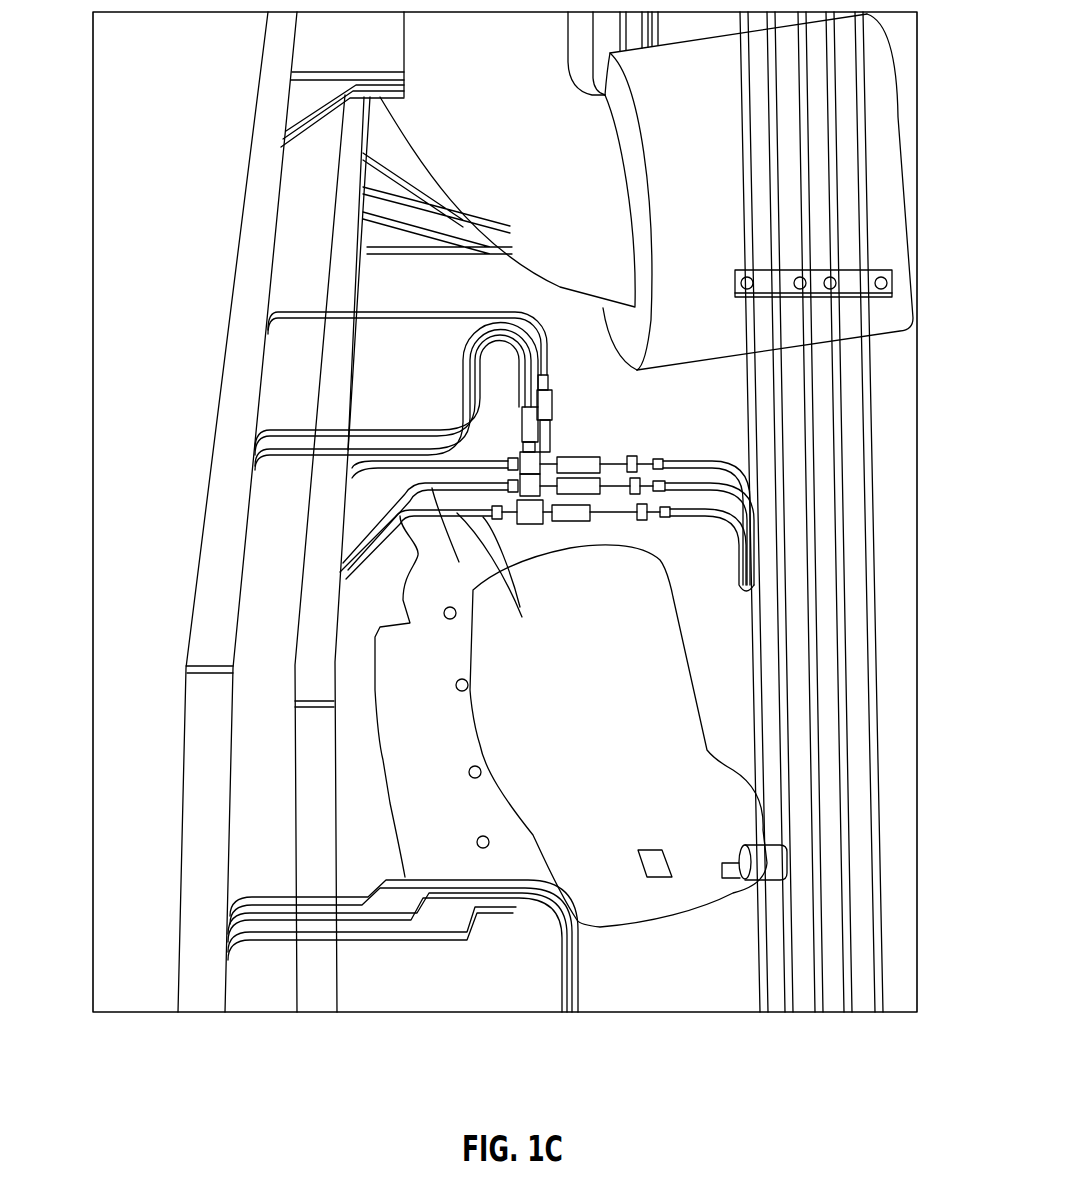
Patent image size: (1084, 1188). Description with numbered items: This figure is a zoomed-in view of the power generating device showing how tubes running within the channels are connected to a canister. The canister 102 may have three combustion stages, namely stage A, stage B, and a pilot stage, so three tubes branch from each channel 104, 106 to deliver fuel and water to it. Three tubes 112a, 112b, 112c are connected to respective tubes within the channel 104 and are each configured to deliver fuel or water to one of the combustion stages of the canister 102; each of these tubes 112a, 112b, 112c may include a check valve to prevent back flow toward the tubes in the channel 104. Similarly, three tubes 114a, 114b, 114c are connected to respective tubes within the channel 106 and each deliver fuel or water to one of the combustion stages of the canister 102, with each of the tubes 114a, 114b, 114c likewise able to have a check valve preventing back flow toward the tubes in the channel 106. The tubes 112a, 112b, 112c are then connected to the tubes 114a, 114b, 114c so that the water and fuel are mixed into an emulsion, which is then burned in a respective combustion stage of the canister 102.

The canister 102 is at (667, 718).
The channel 104 is at (218, 510).
The channel 106 is at (318, 592).
The tube 112a is at (378, 312).
The tube 112b is at (417, 430).
The tube 112c is at (338, 440).
The tube 114a is at (547, 574).
The tube 114b is at (462, 588).
The tube 114c is at (389, 467).